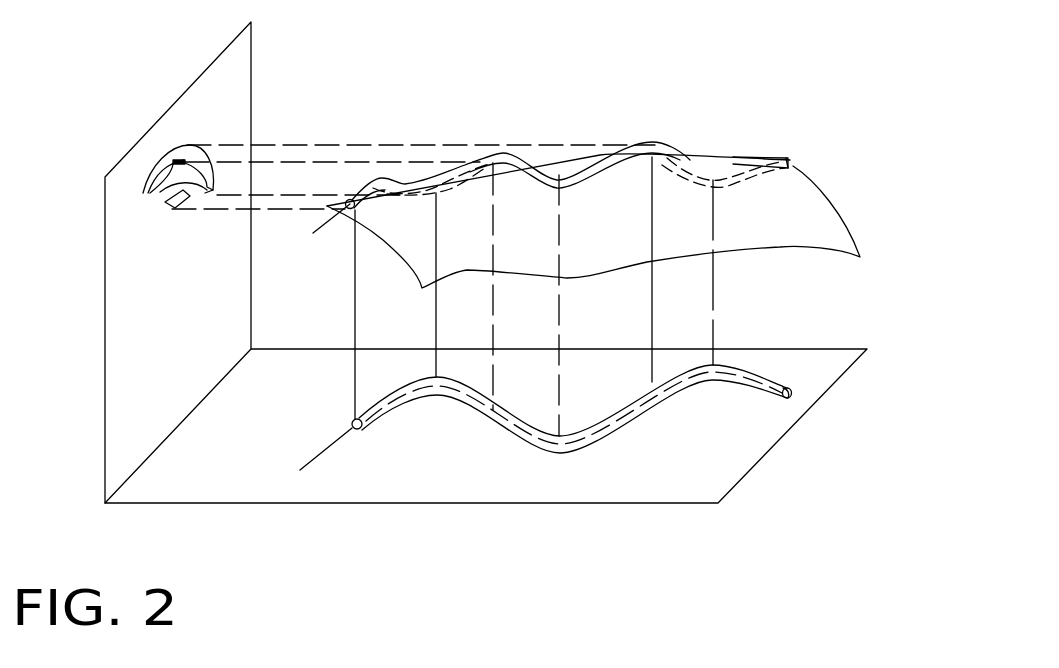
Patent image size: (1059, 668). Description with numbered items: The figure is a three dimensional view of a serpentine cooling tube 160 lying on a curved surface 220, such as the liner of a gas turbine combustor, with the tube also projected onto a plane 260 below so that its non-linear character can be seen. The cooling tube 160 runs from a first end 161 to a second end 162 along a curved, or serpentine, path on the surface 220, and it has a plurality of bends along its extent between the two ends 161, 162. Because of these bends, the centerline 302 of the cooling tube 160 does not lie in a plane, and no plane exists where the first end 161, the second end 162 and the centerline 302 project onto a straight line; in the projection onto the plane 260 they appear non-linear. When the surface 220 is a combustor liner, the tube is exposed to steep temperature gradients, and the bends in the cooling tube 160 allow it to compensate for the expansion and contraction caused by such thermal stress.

The cooling tube 160 is at (578, 176).
The first end 161 is at (347, 201).
The second end 162 is at (790, 160).
The curved surface 220 is at (810, 205).
The plane 260 is at (340, 504).
The centerline 302 is at (310, 458).